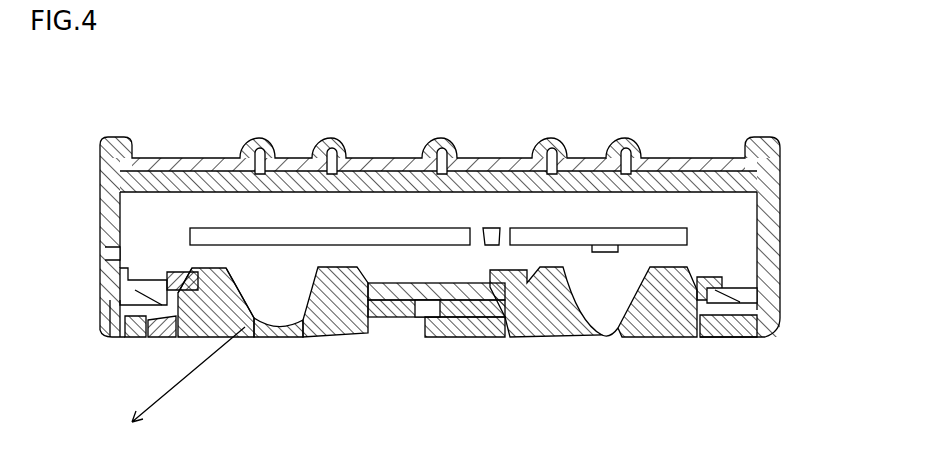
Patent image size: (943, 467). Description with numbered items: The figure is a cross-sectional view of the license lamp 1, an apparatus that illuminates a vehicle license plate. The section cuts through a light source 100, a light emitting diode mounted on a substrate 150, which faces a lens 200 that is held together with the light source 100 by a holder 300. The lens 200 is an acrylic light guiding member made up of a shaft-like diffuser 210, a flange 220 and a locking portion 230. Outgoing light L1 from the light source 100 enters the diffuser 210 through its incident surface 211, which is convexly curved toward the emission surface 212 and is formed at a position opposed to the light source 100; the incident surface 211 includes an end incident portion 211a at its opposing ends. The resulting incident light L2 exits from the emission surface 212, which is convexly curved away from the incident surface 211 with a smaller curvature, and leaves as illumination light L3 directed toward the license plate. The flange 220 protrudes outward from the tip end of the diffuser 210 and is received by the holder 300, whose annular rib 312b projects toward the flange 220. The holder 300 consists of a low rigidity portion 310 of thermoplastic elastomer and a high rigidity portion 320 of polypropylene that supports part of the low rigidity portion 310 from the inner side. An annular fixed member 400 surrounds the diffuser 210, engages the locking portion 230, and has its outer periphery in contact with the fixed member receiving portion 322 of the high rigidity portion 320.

The license lamp 1 is at (635, 102).
The light source 100 is at (300, 264).
The substrate 150 is at (415, 224).
The lens 200 is at (258, 381).
The diffuser 210 is at (300, 336).
The incident surface 211 is at (253, 302).
The end incident portion 211a is at (246, 298).
The emission surface 212 is at (240, 340).
The flange 220 is at (394, 336).
The locking portion 230 is at (180, 266).
The holder 300 is at (525, 381).
The low rigidity portion 310 is at (440, 336).
The annular rib 312b is at (147, 339).
The high rigidity portion 320 is at (494, 336).
The fixed member receiving portion 322 is at (167, 284).
The fixed member 400 is at (166, 262).
The outgoing light L1 is at (262, 252).
The incident light L2 is at (253, 340).
The illumination light L3 is at (190, 372).